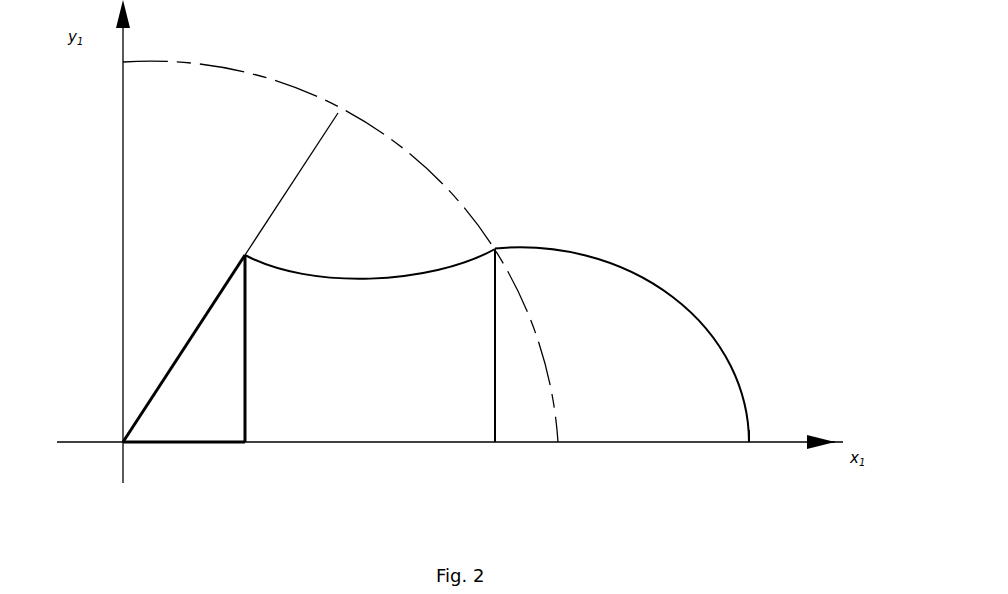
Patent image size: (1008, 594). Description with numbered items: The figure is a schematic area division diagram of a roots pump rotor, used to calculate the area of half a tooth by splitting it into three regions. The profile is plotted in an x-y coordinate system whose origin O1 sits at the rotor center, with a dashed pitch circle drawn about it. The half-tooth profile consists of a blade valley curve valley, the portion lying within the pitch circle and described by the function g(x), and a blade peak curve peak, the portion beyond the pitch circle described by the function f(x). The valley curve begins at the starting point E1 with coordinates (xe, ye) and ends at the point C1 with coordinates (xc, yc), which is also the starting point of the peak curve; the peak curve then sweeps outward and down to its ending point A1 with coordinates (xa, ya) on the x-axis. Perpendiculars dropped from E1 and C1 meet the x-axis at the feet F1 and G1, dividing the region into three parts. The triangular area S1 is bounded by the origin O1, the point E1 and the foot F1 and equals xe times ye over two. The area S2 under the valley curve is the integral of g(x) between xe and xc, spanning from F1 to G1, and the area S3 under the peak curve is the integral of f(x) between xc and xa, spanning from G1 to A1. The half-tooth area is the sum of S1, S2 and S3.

The origin of the rotor coordinate system O1 is at (155, 348).
The starting point of the blade valley curve E1 is at (279, 277).
The foot of the perpendicular from E1 on the x-axis F1 is at (185, 462).
The ending point of the blade valley curve C1 is at (531, 327).
The foot of the perpendicular from C1 on the x-axis G1 is at (492, 391).
The ending point of the blade peak curve A1 is at (753, 467).
The triangular area S1 is at (211, 377).
The blade valley curve area S2 is at (444, 374).
The blade peak curve area S3 is at (659, 374).
The blade valley curve valley is at (362, 292).
The blade peak curve peak is at (738, 290).